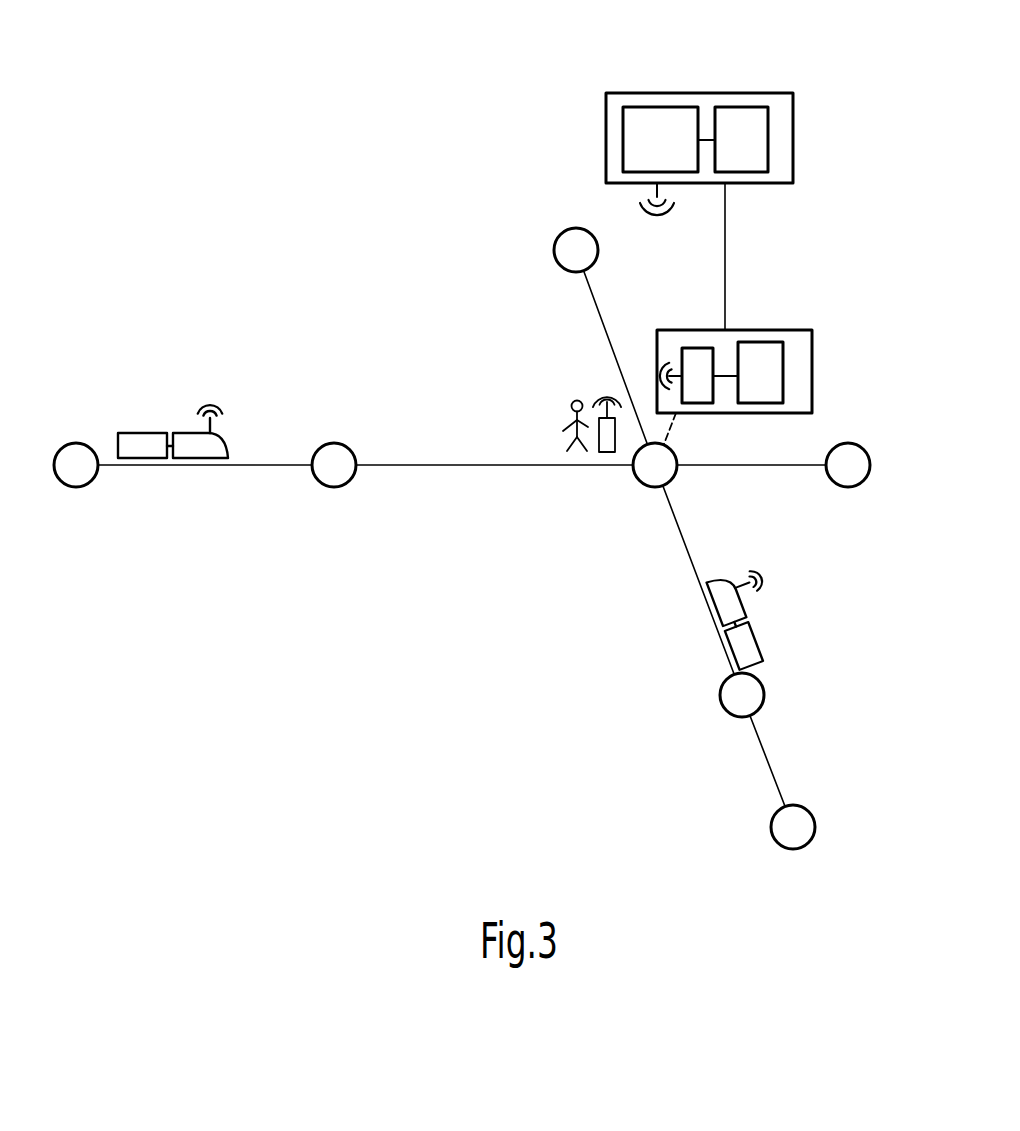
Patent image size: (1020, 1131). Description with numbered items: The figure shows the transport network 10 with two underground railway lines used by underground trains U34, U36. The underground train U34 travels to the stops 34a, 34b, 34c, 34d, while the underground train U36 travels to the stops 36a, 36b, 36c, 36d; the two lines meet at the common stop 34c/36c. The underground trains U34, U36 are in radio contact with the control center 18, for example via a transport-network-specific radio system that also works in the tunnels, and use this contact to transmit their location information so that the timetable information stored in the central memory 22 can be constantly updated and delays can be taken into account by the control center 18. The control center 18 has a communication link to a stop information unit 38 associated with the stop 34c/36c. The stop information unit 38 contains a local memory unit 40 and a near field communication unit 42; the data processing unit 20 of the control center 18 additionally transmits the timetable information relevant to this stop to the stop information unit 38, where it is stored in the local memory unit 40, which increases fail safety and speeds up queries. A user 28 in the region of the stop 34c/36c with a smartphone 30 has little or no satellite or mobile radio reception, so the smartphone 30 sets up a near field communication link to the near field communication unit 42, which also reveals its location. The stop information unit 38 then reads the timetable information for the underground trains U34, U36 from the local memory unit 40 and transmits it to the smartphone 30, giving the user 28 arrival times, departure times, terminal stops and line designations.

The transport network 10 is at (335, 650).
The control center 18 is at (670, 114).
The data processing unit 20 is at (637, 143).
The central memory 22 is at (743, 118).
The user 28 is at (565, 430).
The smartphone 30 is at (602, 385).
The stop 34a is at (80, 442).
The stop 34b is at (330, 442).
The stop 34c is at (643, 485).
The stop 34d is at (830, 485).
The stop 36a is at (772, 843).
The stop 36b is at (720, 694).
The stop 36c is at (635, 473).
The stop 36d is at (567, 248).
The stop information unit 38 is at (776, 354).
The local memory unit 40 is at (767, 372).
The near field communication unit 42 is at (697, 390).
The underground train U34 is at (153, 437).
The underground train U36 is at (750, 648).